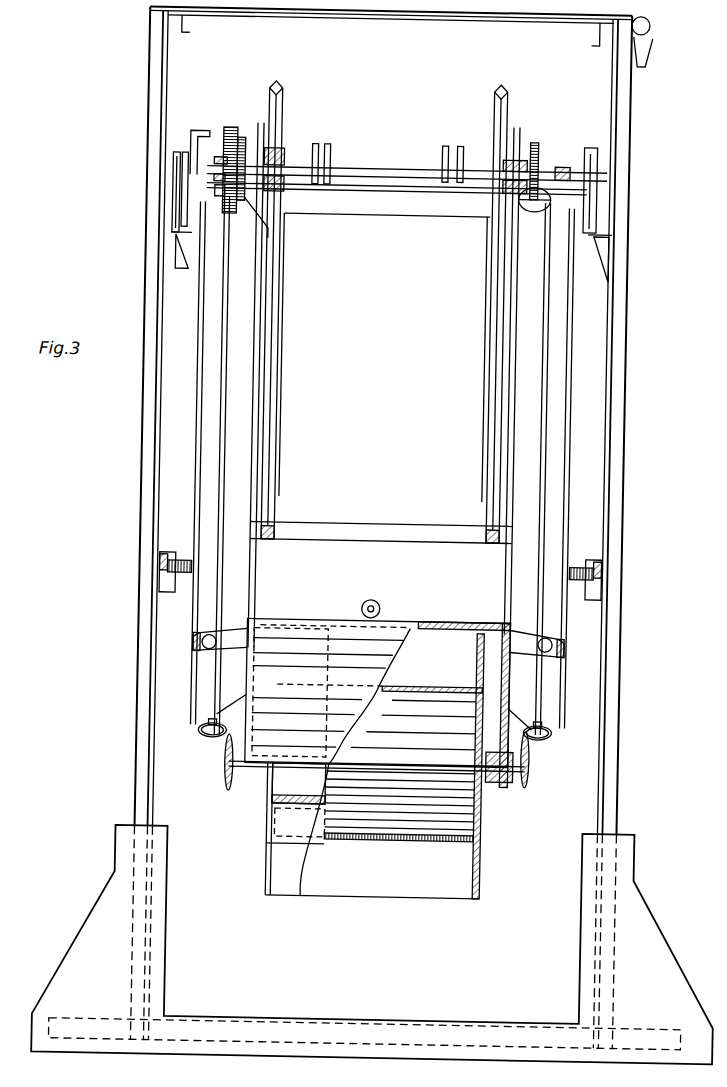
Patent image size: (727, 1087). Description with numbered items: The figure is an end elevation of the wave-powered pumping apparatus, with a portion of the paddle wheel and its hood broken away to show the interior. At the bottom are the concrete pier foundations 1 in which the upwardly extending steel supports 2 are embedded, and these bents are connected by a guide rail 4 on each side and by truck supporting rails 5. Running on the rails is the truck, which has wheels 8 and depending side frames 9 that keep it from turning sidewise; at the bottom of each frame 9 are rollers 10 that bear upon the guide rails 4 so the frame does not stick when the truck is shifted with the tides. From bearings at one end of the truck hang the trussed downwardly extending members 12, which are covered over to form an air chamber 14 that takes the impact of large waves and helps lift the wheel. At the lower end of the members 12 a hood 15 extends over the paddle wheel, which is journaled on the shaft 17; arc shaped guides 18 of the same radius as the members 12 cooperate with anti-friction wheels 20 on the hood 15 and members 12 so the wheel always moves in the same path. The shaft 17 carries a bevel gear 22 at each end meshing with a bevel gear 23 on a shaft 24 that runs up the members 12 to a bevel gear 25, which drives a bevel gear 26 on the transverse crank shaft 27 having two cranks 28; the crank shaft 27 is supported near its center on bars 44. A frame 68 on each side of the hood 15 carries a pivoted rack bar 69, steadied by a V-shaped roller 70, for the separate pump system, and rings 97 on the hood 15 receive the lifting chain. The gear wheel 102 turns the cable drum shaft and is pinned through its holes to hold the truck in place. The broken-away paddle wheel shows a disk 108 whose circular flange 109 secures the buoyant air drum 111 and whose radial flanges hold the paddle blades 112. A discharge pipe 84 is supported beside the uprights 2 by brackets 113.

The pier foundation 1 is at (168, 1000).
The steel support 2 is at (147, 636).
The guide rail 4 is at (160, 568).
The truck supporting rail 5 is at (178, 250).
The wheel 8 is at (172, 200).
The depending side frame 9 is at (196, 406).
The roller 10 is at (184, 578).
The downwardly extending member 12 is at (250, 316).
The air chamber 14 is at (224, 575).
The hood 15 is at (318, 640).
The shaft 17 is at (497, 780).
The arc shaped guide 18 is at (206, 648).
The anti-friction wheel 20 is at (210, 652).
The bevel gear 22 is at (228, 770).
The bevel gear 23 is at (202, 733).
The shaft 24 is at (540, 466).
The bevel gear 25 is at (540, 172).
The bevel gear 26 is at (535, 155).
The crank shaft 27 is at (384, 168).
The crank 28 is at (322, 150).
The bar 44 is at (508, 162).
The frame 68 is at (257, 576).
The rack bar 69 is at (274, 488).
The roller 70 is at (279, 158).
The discharge pipe 84 is at (640, 20).
The ring 97 is at (383, 607).
The gear wheel 102 is at (225, 130).
The disk 108 is at (488, 876).
The circular flange 109 is at (424, 838).
The air drum 111 is at (399, 806).
The paddle blade 112 is at (440, 890).
The bracket 113 is at (634, 52).